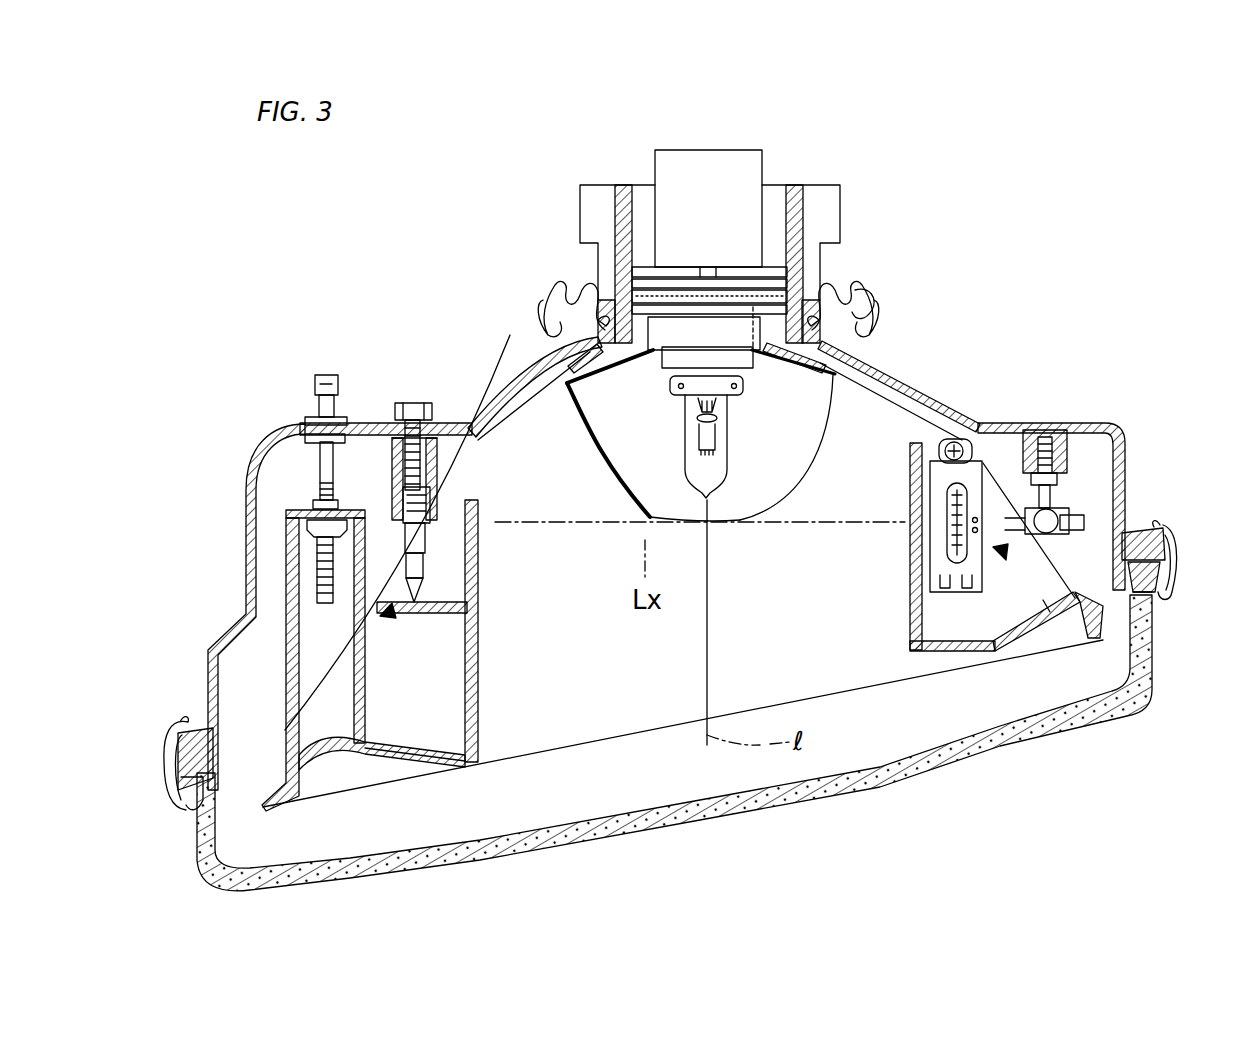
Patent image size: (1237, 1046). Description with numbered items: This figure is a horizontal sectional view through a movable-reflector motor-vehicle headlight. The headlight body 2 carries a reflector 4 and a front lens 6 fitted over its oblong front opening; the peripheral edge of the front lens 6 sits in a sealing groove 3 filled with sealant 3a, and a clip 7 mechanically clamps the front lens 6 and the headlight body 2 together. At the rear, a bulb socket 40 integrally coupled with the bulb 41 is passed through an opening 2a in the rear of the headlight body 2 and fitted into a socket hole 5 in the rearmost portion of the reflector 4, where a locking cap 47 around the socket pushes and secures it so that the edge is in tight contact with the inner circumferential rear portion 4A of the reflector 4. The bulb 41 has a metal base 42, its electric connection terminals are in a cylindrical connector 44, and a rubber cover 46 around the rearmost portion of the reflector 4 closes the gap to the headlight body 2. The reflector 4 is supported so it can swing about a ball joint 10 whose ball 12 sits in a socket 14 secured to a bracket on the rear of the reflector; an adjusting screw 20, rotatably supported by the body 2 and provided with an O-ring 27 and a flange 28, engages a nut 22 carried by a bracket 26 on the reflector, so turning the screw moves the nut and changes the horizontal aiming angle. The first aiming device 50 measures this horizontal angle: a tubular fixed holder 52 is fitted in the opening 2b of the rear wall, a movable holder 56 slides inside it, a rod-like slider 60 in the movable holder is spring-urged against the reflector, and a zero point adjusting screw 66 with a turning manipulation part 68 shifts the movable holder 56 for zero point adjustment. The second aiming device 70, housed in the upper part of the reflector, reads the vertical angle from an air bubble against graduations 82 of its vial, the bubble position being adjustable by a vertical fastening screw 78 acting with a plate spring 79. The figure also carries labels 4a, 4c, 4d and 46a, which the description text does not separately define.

The headlight body 2 is at (922, 368).
The opening 2a is at (882, 303).
The opening of rear wall 2b is at (392, 440).
The sealing groove 3 is at (183, 777).
The sealant 3a is at (200, 820).
The reflector 4 is at (949, 389).
The inner circumferential rear portion 4A is at (587, 351).
The inner housing channel 4a is at (418, 694).
The inner housing bottom 4c is at (433, 640).
The inner housing bottom wall 4d is at (953, 650).
The socket hole 5 is at (654, 362).
The front lens 6 is at (668, 830).
The clip 7 is at (172, 757).
The ball joint 10 is at (1072, 485).
The ball 12 is at (1070, 517).
The socket 14 is at (1097, 543).
The adjusting screw 20 is at (287, 489).
The nut 22 is at (288, 552).
The bracket 26 is at (288, 590).
The O-ring 27 is at (305, 422).
The flange 28 is at (318, 429).
The bulb socket 40 is at (649, 168).
The bulb 41 is at (728, 458).
The metal base 42 is at (759, 371).
The cylindrical connector 44 is at (773, 150).
The rubber cover 46 is at (573, 286).
The spring end 46a is at (590, 330).
The locking cap 47 is at (808, 185).
The first aiming device 50 is at (286, 652).
The fixed holder 52 is at (440, 452).
The movable holder 56 is at (430, 532).
The slider 60 is at (423, 573).
The zero point adjusting screw 66 is at (393, 418).
The turning manipulation part 68 is at (412, 402).
The second aiming device 70 is at (993, 547).
The vertical fastening screw 78 is at (964, 447).
The plate spring 79 is at (950, 543).
The graduations 82 is at (947, 520).